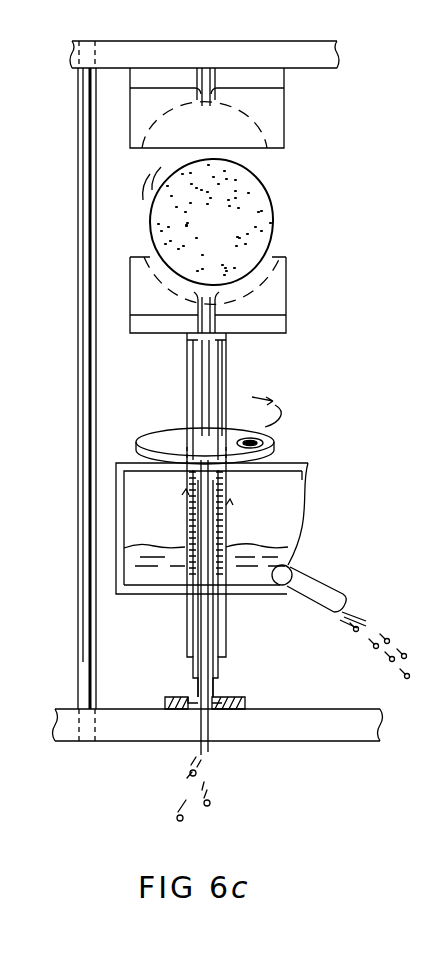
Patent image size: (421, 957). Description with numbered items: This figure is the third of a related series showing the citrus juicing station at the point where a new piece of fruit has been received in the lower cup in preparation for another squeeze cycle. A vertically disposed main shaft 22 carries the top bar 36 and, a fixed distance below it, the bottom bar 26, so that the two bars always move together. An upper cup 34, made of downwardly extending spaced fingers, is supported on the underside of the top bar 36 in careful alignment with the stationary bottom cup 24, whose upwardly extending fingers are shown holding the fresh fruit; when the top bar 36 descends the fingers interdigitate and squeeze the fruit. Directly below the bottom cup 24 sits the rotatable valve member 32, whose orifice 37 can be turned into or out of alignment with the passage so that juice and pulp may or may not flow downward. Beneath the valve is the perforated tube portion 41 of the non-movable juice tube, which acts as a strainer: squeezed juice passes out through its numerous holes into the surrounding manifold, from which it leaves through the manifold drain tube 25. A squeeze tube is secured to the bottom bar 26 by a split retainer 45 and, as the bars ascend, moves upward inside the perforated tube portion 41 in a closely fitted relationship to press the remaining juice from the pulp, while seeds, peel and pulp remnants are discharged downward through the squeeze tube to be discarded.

The main shaft 22 is at (83, 90).
The top bar 36 is at (323, 50).
The upper cup 34 is at (277, 120).
The bottom cup 24 is at (272, 279).
The rotatable valve member 32 is at (268, 438).
The orifice 37 is at (273, 455).
The perforated tube portion 41 is at (223, 525).
The manifold drain tube 25 is at (315, 592).
The split retainer 45 is at (247, 710).
The bottom bar 26 is at (350, 730).